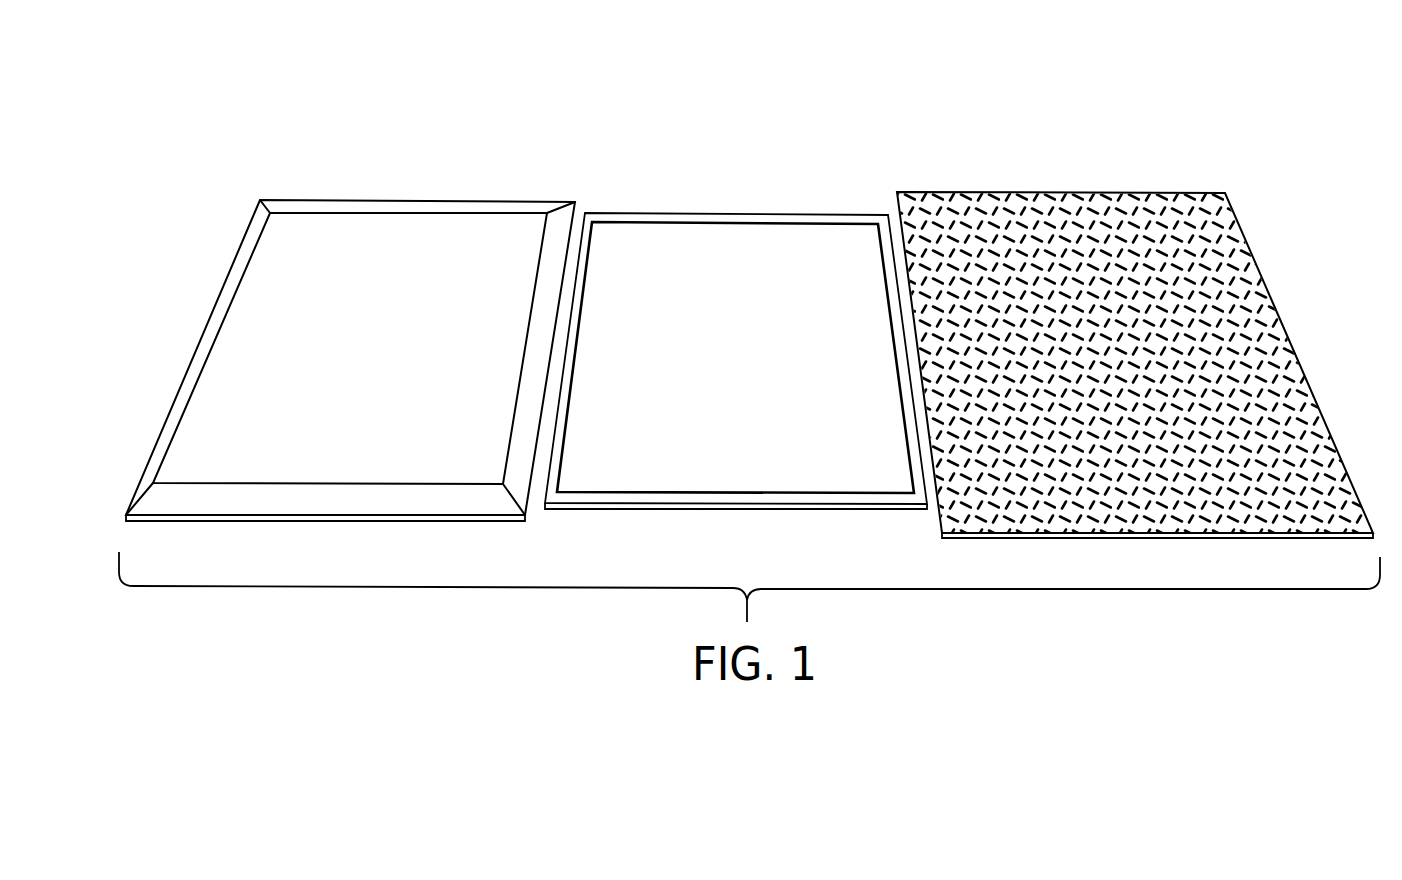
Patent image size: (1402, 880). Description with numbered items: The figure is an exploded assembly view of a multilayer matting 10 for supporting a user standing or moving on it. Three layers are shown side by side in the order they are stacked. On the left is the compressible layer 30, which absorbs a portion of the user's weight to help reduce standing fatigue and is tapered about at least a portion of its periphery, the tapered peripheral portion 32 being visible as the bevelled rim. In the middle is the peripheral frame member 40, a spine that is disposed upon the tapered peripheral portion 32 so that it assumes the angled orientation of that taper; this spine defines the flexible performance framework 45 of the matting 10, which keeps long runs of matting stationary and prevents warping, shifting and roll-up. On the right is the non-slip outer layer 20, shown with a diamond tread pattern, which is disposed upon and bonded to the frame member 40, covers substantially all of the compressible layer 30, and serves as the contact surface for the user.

The matting 10 is at (964, 114).
The non-slip outer layer 20 is at (1140, 186).
The compressible layer 30 is at (397, 194).
The tapered peripheral portion 32 is at (460, 503).
The frame member 40 is at (770, 497).
The performance framework 45 is at (710, 206).